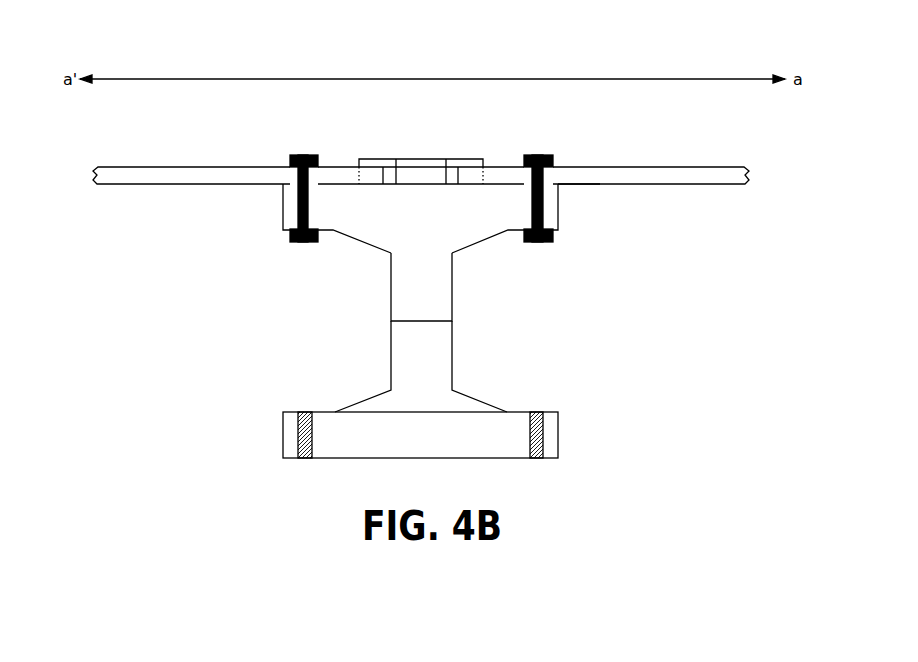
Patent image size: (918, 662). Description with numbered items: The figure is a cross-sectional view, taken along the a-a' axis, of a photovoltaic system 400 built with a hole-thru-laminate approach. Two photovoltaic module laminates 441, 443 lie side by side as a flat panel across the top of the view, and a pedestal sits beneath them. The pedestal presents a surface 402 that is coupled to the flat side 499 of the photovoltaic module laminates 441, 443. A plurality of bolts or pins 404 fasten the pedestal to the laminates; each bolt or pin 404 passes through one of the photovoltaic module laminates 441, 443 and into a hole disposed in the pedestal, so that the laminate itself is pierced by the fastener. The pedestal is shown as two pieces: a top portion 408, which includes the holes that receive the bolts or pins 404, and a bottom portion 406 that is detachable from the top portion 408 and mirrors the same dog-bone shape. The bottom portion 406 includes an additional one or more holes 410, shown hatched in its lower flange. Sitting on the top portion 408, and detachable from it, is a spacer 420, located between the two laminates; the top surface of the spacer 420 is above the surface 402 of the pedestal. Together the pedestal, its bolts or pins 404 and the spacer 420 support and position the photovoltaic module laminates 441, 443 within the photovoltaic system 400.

The photovoltaic system 400 is at (710, 41).
The surface 402 is at (338, 184).
The bolt or pin 404 is at (541, 153).
The bottom portion 406 is at (472, 354).
The top portion 408 is at (472, 286).
The holes 410 is at (538, 412).
The spacer 420 is at (483, 153).
The photovoltaic module laminate 441 is at (638, 176).
The photovoltaic module laminate 443 is at (183, 175).
The flat side 499 is at (575, 184).